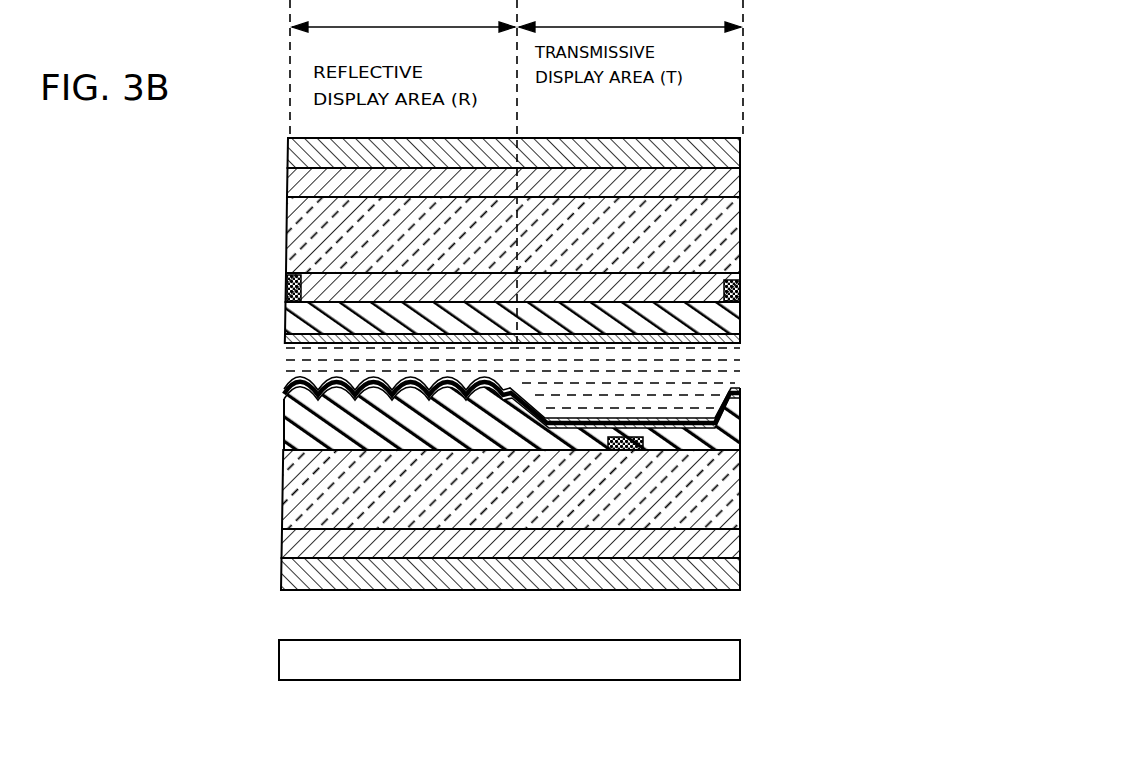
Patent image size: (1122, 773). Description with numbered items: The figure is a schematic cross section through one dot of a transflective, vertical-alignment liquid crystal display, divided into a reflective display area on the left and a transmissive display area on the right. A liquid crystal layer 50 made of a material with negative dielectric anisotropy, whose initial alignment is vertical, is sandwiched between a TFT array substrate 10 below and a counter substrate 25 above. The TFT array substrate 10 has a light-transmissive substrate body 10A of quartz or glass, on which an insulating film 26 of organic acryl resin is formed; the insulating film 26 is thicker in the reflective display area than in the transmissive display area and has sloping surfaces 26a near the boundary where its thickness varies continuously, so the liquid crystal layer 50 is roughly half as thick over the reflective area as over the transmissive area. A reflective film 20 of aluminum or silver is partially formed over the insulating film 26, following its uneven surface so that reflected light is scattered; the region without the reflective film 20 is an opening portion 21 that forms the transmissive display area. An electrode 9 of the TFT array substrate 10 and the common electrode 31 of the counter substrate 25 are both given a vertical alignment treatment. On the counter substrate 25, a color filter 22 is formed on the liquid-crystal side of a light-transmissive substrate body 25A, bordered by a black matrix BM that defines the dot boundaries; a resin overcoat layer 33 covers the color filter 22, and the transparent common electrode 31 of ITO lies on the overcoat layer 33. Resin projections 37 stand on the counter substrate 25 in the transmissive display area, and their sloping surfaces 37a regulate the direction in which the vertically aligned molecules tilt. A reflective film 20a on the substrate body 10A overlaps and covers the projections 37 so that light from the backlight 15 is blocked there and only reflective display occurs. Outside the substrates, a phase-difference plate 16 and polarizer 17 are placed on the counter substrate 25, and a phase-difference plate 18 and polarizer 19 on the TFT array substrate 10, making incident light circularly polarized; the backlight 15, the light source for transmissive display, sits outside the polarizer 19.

The counter substrate 25 is at (194, 140).
The polarizer 17 is at (742, 152).
The phase-difference plate 16 is at (742, 190).
The substrate body 25A is at (742, 228).
The color filter 22 is at (742, 276).
The black matrix BM is at (287, 290).
The overcoat layer 33 is at (742, 315).
The common electrode 31 is at (742, 343).
The liquid crystal layer 50 is at (742, 355).
The projections 37 is at (624, 352).
The sloping surfaces 37a is at (666, 352).
The TFT array substrate 10 is at (191, 382).
The electrode 9 is at (286, 376).
The reflective film 20 is at (285, 393).
The insulating film 26 is at (742, 440).
The sloping surfaces 26a is at (742, 405).
The reflective film 20a is at (640, 452).
The substrate body 10A is at (742, 512).
The phase-difference plate 18 is at (742, 543).
The polarizer 19 is at (742, 575).
The opening portions 21 is at (519, 385).
The backlight 15 is at (742, 655).